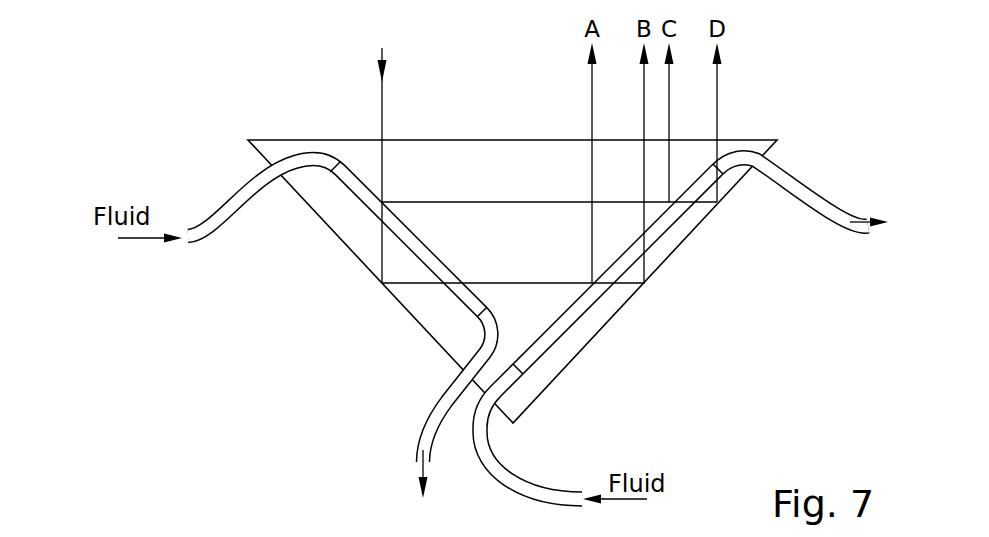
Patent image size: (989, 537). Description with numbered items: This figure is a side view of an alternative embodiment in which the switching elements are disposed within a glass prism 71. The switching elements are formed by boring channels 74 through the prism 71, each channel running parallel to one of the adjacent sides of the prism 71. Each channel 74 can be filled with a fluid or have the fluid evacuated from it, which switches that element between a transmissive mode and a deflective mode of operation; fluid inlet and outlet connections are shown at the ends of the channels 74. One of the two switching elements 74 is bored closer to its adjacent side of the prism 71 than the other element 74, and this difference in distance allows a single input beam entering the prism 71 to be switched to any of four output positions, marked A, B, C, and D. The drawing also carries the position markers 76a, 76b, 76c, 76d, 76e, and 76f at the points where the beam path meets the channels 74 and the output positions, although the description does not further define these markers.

The prism 71 is at (297, 139).
The channels 74 is at (370, 206).
The first position 76a is at (384, 202).
The second position 76b is at (382, 285).
The third position 76c is at (594, 284).
The fourth position 76d is at (647, 283).
The fifth position 76e is at (671, 201).
The sixth position 76f is at (719, 204).